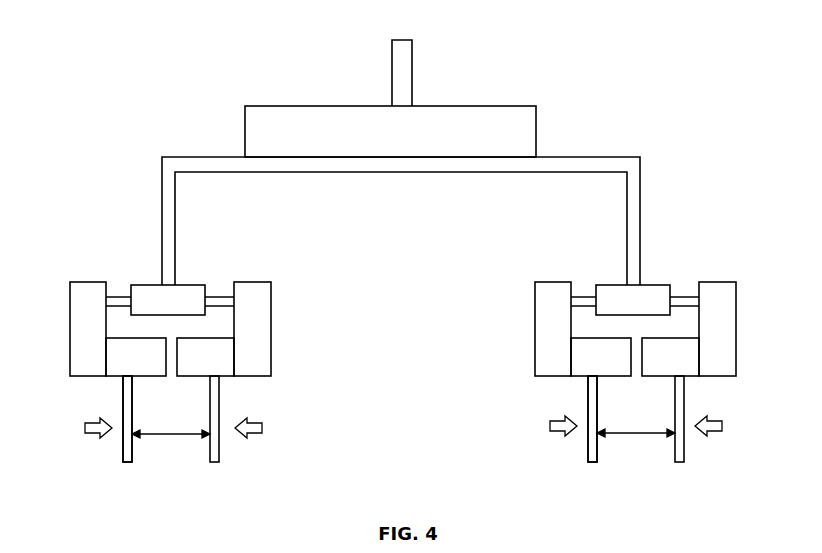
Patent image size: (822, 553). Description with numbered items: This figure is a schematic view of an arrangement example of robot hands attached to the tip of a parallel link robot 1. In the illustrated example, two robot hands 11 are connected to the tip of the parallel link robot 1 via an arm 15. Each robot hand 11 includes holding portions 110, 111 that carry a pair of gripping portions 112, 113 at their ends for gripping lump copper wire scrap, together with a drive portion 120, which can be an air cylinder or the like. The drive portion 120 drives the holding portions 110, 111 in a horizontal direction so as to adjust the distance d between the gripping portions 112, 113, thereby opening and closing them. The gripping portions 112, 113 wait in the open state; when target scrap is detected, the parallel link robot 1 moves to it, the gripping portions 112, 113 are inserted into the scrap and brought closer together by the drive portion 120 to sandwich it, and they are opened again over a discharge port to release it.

The parallel link robot 1 is at (373, 120).
The arm 15 is at (171, 227).
The robot hand 11 is at (53, 243).
The drive portion 120 is at (150, 288).
The holding portion 110 is at (188, 375).
The holding portion 111 is at (120, 377).
The gripping portion 112 is at (213, 450).
The gripping portion 113 is at (125, 448).